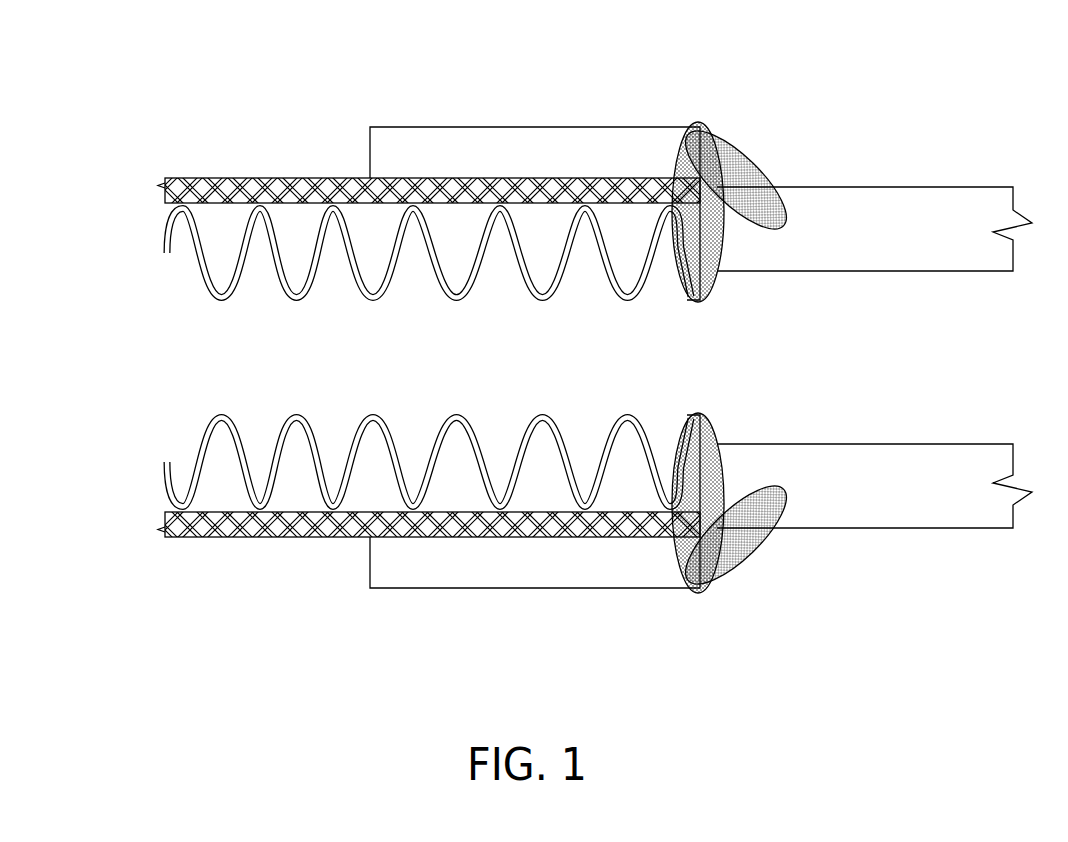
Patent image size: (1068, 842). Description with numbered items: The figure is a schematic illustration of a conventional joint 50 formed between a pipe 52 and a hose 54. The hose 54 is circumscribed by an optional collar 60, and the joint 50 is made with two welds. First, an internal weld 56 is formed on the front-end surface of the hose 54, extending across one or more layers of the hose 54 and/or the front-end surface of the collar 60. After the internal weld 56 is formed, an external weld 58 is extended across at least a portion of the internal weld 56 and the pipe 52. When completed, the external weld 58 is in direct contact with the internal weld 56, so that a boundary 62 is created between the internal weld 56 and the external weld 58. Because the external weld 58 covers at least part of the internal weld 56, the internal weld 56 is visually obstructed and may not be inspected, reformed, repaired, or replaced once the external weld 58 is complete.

The joint 50 is at (516, 76).
The pipe 52 is at (905, 187).
The hose 54 is at (211, 160).
The internal weld 56 is at (676, 181).
The external weld 58 is at (756, 168).
The collar 60 is at (428, 127).
The boundary 62 is at (705, 232).